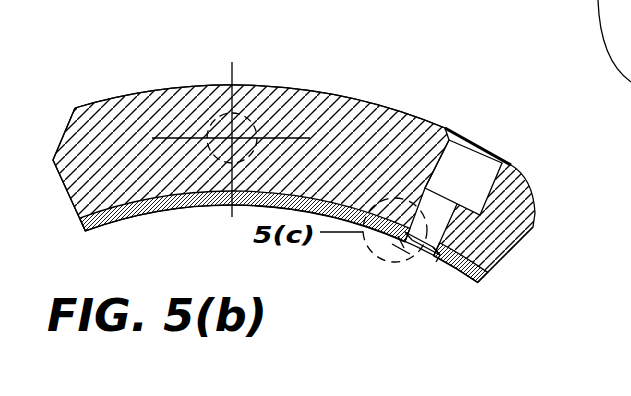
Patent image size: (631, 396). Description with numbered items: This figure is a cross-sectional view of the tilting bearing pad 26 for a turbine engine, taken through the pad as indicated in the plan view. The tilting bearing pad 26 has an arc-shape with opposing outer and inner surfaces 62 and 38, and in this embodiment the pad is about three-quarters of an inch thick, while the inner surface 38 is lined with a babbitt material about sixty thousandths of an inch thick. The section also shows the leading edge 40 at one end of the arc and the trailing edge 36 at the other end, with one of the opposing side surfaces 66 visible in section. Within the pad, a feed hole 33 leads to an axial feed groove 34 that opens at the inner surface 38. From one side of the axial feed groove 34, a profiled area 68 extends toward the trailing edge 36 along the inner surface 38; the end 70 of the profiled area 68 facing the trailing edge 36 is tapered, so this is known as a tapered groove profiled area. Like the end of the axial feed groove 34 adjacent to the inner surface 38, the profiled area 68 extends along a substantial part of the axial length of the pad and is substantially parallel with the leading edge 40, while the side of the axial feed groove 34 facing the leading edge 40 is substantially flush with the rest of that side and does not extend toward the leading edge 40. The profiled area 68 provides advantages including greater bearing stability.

The tilting bearing pad 26 is at (97, 90).
The side surface 66 is at (123, 135).
The outer surface 62 is at (350, 97).
The trailing edge 36 is at (70, 190).
The inner surface 38 is at (158, 212).
The feed hole 33 is at (430, 210).
The leading edge 40 is at (513, 238).
The profiled area 68 is at (403, 233).
The end of the profiled area 70 is at (392, 257).
The axial feed groove 34 is at (428, 248).